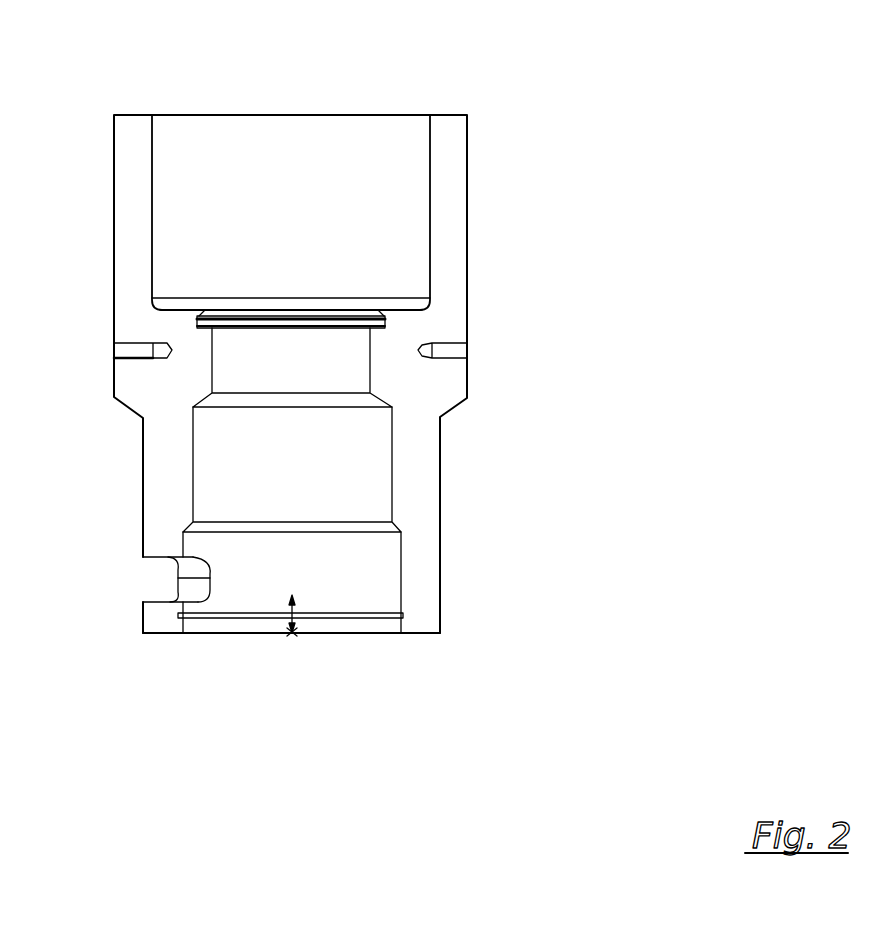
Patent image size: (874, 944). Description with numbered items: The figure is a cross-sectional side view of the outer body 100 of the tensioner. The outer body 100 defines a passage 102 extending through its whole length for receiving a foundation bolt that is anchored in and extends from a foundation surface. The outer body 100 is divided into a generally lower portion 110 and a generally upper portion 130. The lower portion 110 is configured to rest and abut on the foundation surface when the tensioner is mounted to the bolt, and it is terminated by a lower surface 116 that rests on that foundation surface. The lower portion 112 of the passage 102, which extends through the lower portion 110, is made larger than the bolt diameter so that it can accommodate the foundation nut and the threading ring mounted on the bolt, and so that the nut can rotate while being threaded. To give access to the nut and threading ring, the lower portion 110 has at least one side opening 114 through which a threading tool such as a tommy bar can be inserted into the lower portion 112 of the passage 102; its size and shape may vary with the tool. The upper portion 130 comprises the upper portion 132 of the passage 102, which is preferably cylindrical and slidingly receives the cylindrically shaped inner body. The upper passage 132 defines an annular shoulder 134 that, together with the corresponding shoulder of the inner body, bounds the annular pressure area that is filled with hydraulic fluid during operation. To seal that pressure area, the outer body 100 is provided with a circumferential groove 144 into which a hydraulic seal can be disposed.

The outer body 100 is at (605, 162).
The passage 102 is at (378, 152).
The lower portion 110 is at (492, 403).
The lower portion of the passage 112 is at (307, 489).
The side opening 114 is at (157, 584).
The lower surface 116 is at (420, 633).
The upper portion 130 is at (482, 115).
The upper portion of the passage 132 is at (318, 234).
The annular shoulder 134 is at (400, 312).
The circumferential groove 144 is at (365, 325).